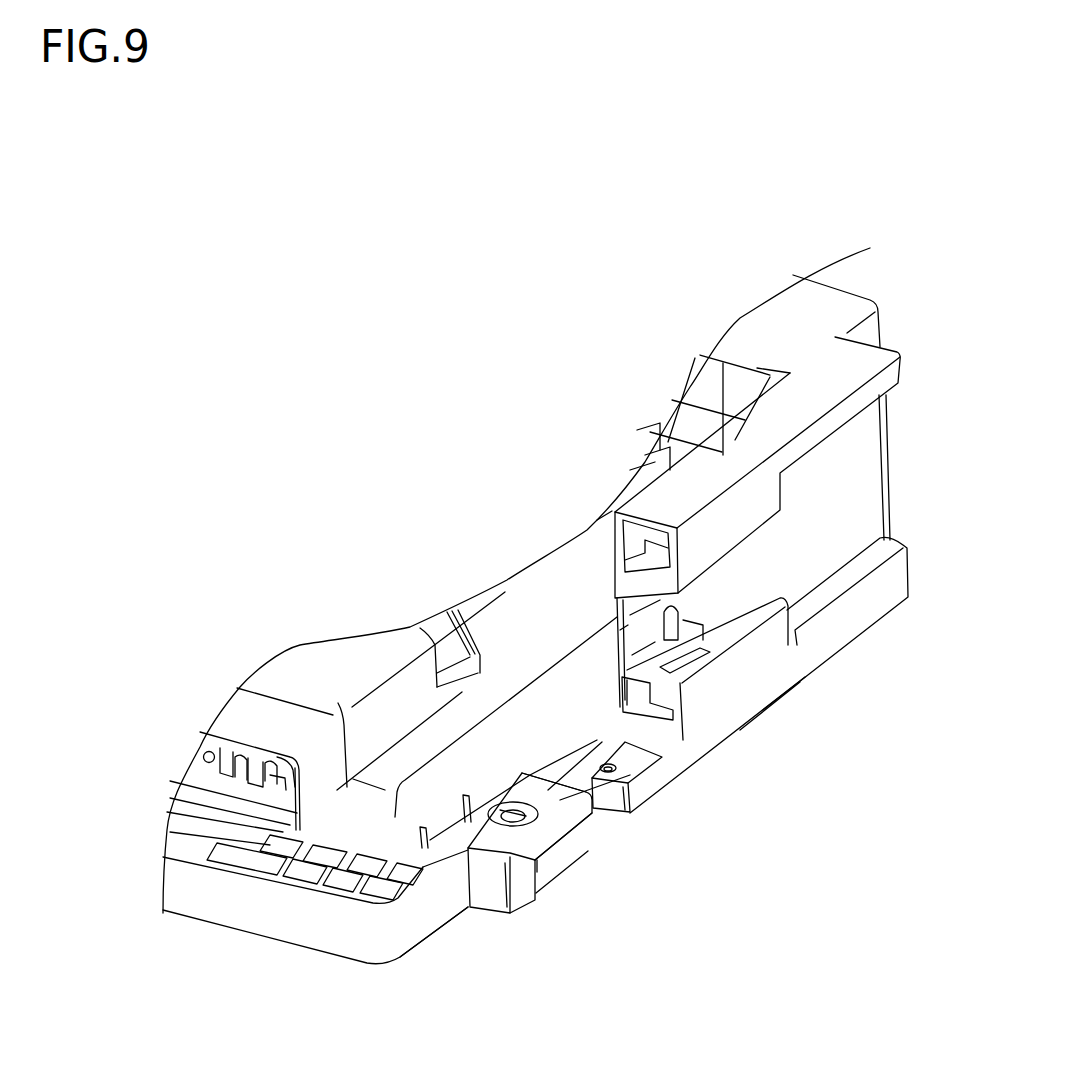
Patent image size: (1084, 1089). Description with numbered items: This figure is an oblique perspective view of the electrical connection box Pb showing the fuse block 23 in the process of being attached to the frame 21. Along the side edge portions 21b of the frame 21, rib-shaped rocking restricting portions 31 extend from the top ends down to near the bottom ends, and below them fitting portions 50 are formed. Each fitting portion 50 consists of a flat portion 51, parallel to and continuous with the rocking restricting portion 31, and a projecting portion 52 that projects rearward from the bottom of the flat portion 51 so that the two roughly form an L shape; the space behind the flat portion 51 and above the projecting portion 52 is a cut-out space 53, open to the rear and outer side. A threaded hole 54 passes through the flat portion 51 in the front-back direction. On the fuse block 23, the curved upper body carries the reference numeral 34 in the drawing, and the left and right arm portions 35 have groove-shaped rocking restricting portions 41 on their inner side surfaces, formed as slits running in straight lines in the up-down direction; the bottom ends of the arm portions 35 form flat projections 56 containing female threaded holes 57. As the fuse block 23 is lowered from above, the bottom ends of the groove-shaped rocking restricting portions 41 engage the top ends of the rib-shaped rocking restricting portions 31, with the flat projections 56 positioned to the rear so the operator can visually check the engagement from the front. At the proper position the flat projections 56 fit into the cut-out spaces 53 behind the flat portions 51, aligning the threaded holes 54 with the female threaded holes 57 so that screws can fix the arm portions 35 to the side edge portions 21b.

The electrical connection box Pb is at (594, 214).
The frame 21 is at (330, 933).
The side edge portions 21b is at (458, 900).
The fuse block 23 is at (820, 204).
The rocking restricting portions 31 is at (597, 743).
The curved top wall 34 is at (750, 330).
The arm portions 35 is at (875, 605).
The rocking restricting portions 41 is at (645, 715).
The fitting portions 50 is at (553, 883).
The flat portions 51 is at (567, 821).
The projecting portions 52 is at (525, 880).
The cut-out spaces 53 is at (540, 867).
The threaded holes 54 is at (517, 817).
The flat projections 56 is at (618, 797).
The female threaded holes 57 is at (612, 767).